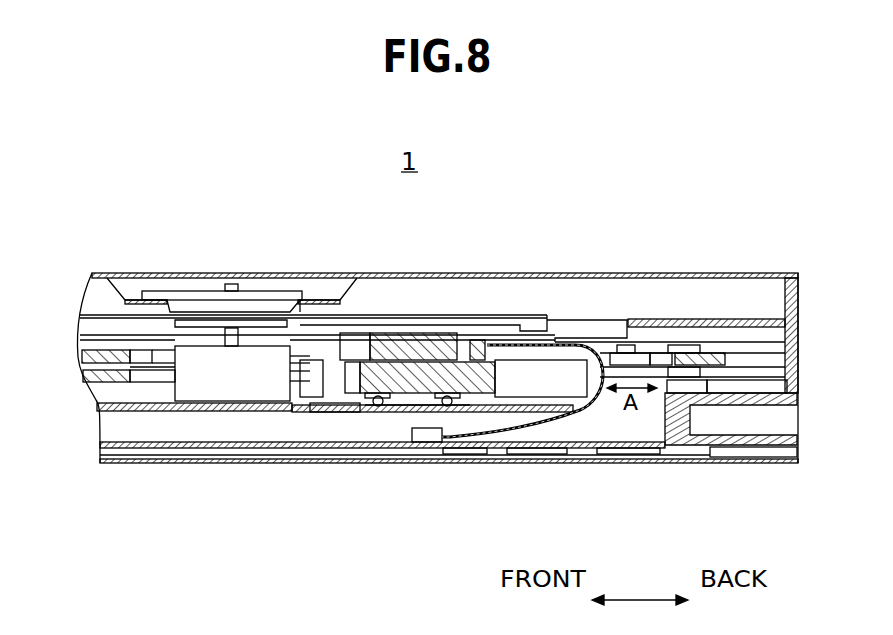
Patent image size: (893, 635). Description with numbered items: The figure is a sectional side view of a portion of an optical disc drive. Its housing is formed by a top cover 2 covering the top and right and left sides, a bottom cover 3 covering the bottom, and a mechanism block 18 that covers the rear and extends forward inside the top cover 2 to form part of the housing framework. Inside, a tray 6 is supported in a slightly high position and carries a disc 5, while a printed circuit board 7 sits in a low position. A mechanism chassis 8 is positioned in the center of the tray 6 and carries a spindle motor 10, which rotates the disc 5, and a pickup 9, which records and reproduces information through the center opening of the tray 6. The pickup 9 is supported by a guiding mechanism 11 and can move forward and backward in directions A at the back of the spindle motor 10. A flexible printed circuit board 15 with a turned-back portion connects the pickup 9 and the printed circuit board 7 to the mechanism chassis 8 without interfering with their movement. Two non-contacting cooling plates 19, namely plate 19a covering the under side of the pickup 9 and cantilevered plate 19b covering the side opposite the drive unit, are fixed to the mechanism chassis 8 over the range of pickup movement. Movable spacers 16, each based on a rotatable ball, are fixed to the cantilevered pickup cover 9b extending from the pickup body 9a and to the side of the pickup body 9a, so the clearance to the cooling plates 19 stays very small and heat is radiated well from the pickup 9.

The top cover 2 is at (625, 275).
The bottom cover 3 is at (662, 446).
The disc 5 is at (438, 318).
The tray 6 is at (710, 319).
The printed circuit board 7 is at (593, 448).
The mechanism chassis 8 is at (90, 375).
The pickup 9 is at (377, 395).
The pickup body 9a is at (352, 375).
The pickup cover 9b is at (368, 393).
The spindle motor 10 is at (195, 365).
The guiding mechanism 11 is at (355, 335).
The flexible printed circuit board 15 is at (527, 440).
The movable spacers 16 is at (462, 410).
The mechanism block 18 is at (798, 373).
The non-contacting cooling plates 19 is at (238, 461).
The non-contacting cooling plate 19a is at (355, 365).
The non-contacting cooling plate 19b is at (320, 380).